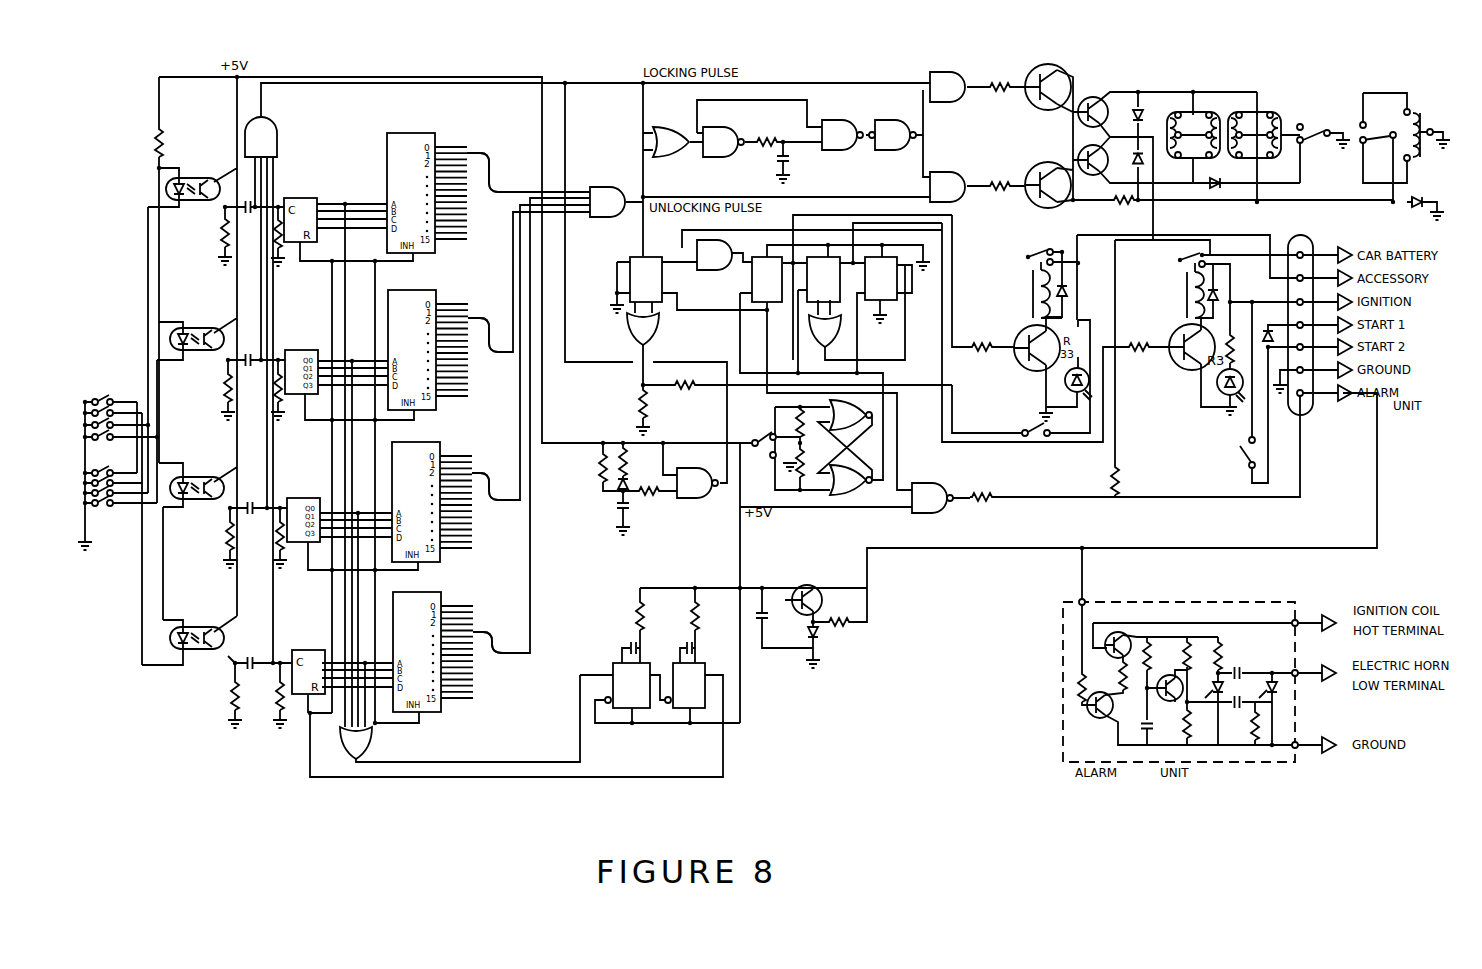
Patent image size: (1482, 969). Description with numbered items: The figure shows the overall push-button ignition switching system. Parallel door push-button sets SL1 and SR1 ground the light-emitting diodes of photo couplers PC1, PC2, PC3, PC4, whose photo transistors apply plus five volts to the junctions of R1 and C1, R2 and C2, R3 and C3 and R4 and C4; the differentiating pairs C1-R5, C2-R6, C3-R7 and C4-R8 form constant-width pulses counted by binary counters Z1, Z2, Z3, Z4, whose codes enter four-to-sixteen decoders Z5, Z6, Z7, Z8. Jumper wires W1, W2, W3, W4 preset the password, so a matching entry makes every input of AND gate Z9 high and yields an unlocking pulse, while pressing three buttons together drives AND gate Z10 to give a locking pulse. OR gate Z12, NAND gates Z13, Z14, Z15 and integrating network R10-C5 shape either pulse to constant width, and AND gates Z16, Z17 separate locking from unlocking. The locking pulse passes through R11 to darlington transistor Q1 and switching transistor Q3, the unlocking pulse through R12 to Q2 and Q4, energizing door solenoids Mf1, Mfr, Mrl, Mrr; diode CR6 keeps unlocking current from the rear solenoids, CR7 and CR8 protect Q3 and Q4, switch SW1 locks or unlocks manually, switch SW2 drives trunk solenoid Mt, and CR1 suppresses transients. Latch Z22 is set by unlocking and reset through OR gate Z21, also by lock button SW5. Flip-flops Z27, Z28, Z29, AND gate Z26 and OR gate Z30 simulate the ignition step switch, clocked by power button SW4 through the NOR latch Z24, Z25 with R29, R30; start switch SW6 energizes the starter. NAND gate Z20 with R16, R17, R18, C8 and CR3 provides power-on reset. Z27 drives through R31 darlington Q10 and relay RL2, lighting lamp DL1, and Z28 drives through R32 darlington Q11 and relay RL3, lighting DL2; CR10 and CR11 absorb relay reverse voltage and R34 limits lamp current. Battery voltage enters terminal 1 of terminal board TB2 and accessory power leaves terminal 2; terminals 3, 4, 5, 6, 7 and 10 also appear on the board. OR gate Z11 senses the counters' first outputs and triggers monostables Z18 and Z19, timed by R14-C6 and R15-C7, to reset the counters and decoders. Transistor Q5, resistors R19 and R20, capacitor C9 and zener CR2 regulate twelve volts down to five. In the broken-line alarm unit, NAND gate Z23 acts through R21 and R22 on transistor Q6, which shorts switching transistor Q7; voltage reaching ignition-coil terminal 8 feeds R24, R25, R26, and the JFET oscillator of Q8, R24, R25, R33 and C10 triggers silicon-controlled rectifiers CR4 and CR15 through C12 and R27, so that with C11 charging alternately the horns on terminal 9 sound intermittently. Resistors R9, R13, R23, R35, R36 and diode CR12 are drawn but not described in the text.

The resistor R9 is at (141, 142).
The photocoupler PC1 is at (193, 180).
The photocoupler PC2 is at (197, 330).
The photocoupler PC3 is at (197, 479).
The photocoupler PC4 is at (197, 628).
The AND gate Z10 is at (276, 137).
The capacitor C1 is at (248, 198).
The capacitor C2 is at (248, 349).
The capacitor C3 is at (251, 499).
The capacitor C4 is at (245, 653).
The resistor R1 is at (216, 232).
The resistor R2 is at (217, 387).
The resistor R3 is at (220, 535).
The resistor R4 is at (223, 695).
The resistor R5 is at (287, 237).
The resistor R6 is at (287, 392).
The resistor R7 is at (288, 540).
The resistor R8 is at (272, 695).
The counter Z1 is at (300, 210).
The counter Z2 is at (301, 363).
The counter Z3 is at (303, 510).
The counter Z4 is at (308, 662).
The decoder Z5 is at (427, 184).
The decoder Z6 is at (428, 341).
The decoder Z7 is at (432, 492).
The decoder Z8 is at (433, 643).
The jumper wire W1 is at (486, 174).
The jumper wire W2 is at (491, 346).
The jumper wire W3 is at (493, 503).
The jumper wire W4 is at (493, 658).
The AND gate Z9 is at (607, 194).
The OR gate Z11 is at (369, 743).
The OR gate Z12 is at (671, 133).
The NAND gate Z13 is at (723, 133).
The resistor R10 is at (768, 134).
The capacitor C5 is at (773, 158).
The NAND gate Z14 is at (842, 126).
The inverter Z15 is at (892, 126).
The AND gate Z16 is at (947, 78).
The AND gate Z17 is at (947, 178).
The resistor R11 is at (1002, 78).
The resistor R12 is at (1001, 177).
The transistor Q1 is at (1048, 78).
The transistor Q2 is at (1044, 181).
The transistor Q3 is at (1093, 104).
The transistor Q4 is at (1093, 168).
The diode CR7 is at (1125, 107).
The diode CR8 is at (1128, 164).
The resistor R13 is at (1123, 207).
The front left motor relay Mf1 is at (1187, 125).
The front right motor relay Mfr is at (1207, 103).
The rear left motor relay Mrl is at (1254, 125).
The rear right motor relay Mrr is at (1273, 103).
The diode CR6 is at (1216, 176).
The switch SW1 is at (1317, 128).
The switch SW2 is at (1378, 126).
The trunk motor relay Mt is at (1418, 126).
The diode CR1 is at (1427, 191).
The flip-flop Z22 is at (636, 269).
The AND gate Z26 is at (714, 263).
The latch Z27 is at (754, 279).
The flip-flop Z28 is at (811, 279).
The latch Z29 is at (872, 278).
The OR gate Z30 is at (832, 324).
The OR gate Z21 is at (658, 329).
The resistor R34 is at (658, 403).
The resistor R35 is at (689, 390).
The NOR gate Z24 is at (855, 410).
The NOR gate Z25 is at (855, 484).
The resistor R29 is at (789, 422).
The resistor R30 is at (789, 468).
The switch SW4 is at (758, 449).
The NAND gate Z20 is at (697, 475).
The resistor R16 is at (589, 467).
The resistor R17 is at (637, 461).
The diode CR3 is at (635, 482).
The resistor R18 is at (652, 499).
The capacitor C8 is at (610, 506).
The NAND gate Z23 is at (932, 507).
The resistor R21 is at (985, 504).
The relay RL2 is at (1027, 268).
The diode CR10 is at (1082, 288).
The transistor Q10 is at (1031, 340).
The resistor R31 is at (984, 356).
The light emitting diode DL1 is at (1071, 387).
The switch SW5 is at (1013, 426).
The relay RL3 is at (1180, 276).
The diode CR11 is at (1236, 289).
The transistor Q11 is at (1186, 339).
The resistor R32 is at (1140, 356).
The resistor near Q11 R36 is at (1230, 348).
The light emitting diode DL2 is at (1230, 395).
The diode CR12 is at (1269, 323).
The switch SW6 is at (1230, 453).
The resistor R19 is at (1130, 480).
The terminal block TB2 is at (1309, 335).
The car battery terminal 1 is at (1345, 255).
The accessory terminal 2 is at (1345, 278).
The ignition terminal 3 is at (1345, 302).
The start 1 terminal 4 is at (1345, 325).
The start 2 terminal 5 is at (1345, 347).
The ground terminal 6 is at (1345, 370).
The alarm unit terminal 7 is at (1345, 393).
The ignition coil hot terminal 8 is at (1329, 623).
The electric horn low terminal 9 is at (1329, 673).
The ground terminal 10 is at (1329, 745).
The monostable Z18 is at (622, 692).
The monostable Z19 is at (681, 692).
The resistor R14 is at (654, 615).
The resistor R15 is at (709, 615).
The capacitor C6 is at (621, 641).
The capacitor C7 is at (676, 641).
The capacitor C9 is at (770, 623).
The transistor Q5 is at (807, 592).
The diode CR2 is at (828, 633).
The resistor R20 is at (840, 613).
The transistor Q7 is at (1116, 640).
The transistor Q6 is at (1099, 713).
The transistor Q8 is at (1170, 678).
The resistor R22 is at (1076, 687).
The resistor R23 is at (1109, 675).
The resistor R24 is at (1157, 653).
The resistor R25 is at (1197, 653).
The resistor R26 is at (1229, 653).
The capacitor C11 is at (1242, 664).
The capacitor C12 is at (1239, 708).
The SCR CR4 is at (1225, 690).
The SCR CR15 is at (1281, 694).
The capacitor C10 is at (1134, 719).
The resistor R33 is at (1197, 723).
The resistor R27 is at (1242, 727).
The left sensor switches SL1-SL4 SL1 is at (96, 408).
The right sensor switches SR1-SR4 SR1 is at (112, 505).